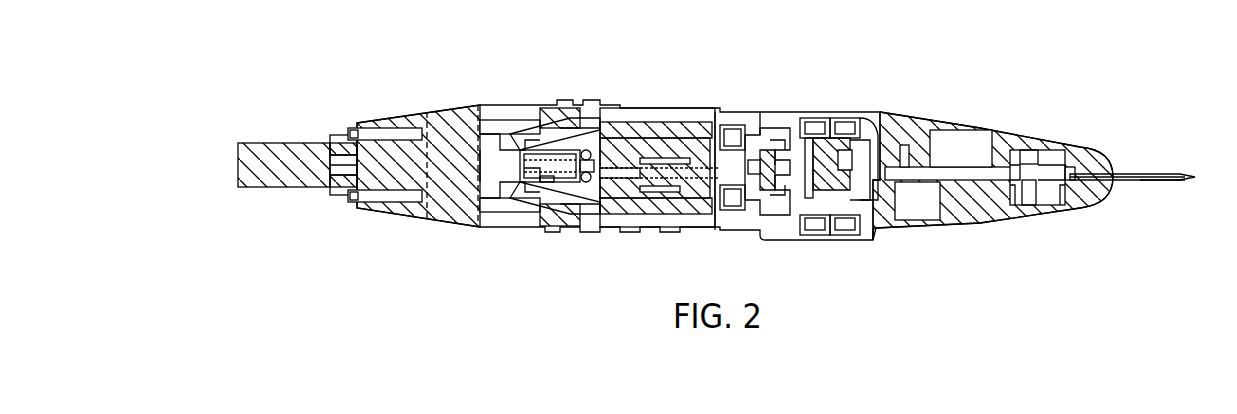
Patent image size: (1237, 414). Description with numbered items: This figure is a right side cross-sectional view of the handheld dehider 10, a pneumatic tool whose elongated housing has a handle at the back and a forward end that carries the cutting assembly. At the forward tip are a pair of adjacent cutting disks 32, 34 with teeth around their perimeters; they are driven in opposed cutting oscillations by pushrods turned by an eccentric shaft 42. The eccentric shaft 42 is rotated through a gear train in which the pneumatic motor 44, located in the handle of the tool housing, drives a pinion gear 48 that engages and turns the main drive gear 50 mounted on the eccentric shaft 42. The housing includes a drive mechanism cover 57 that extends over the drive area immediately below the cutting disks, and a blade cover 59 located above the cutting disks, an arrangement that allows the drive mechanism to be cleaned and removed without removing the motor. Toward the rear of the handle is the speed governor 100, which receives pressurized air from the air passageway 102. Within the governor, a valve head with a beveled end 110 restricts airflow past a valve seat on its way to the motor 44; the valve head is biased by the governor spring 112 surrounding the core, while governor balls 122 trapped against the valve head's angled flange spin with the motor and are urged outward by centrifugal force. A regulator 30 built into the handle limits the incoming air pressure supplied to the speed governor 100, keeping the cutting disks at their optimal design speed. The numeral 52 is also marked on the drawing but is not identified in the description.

The handheld dehider 10 is at (810, 65).
The regulator 30 is at (445, 212).
The cutting disk 32 is at (1148, 170).
The cutting disk 34 is at (1148, 184).
The eccentric shaft 42 is at (794, 128).
The pneumatic motor 44 is at (665, 146).
The pinion gear 48 is at (762, 185).
The main drive gear 50 is at (855, 132).
The spring 52 is at (838, 125).
The drive mechanism cover 57 is at (885, 116).
The blade cover 59 is at (978, 140).
The speed governor 100 is at (553, 147).
The air passageway 102 is at (458, 108).
The beveled end 110 is at (537, 170).
The governor spring 112 is at (553, 180).
The governor balls 122 is at (592, 150).